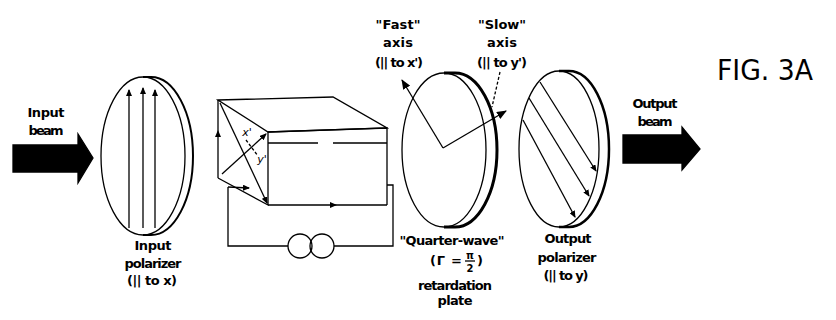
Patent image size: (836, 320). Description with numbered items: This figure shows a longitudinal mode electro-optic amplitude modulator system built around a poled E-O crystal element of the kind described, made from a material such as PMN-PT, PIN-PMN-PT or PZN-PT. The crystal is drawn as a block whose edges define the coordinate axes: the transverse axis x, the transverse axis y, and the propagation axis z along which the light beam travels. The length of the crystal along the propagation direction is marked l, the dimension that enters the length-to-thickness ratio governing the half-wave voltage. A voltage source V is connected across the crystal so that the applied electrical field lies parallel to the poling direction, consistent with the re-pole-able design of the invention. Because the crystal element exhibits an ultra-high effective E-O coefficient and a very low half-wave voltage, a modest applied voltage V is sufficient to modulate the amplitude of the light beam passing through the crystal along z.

The x axis of crystal x is at (210, 139).
The y axis of crystal y is at (238, 195).
The z axis (propagation direction) z is at (327, 196).
The crystal length l is at (327, 144).
The applied voltage V is at (311, 255).